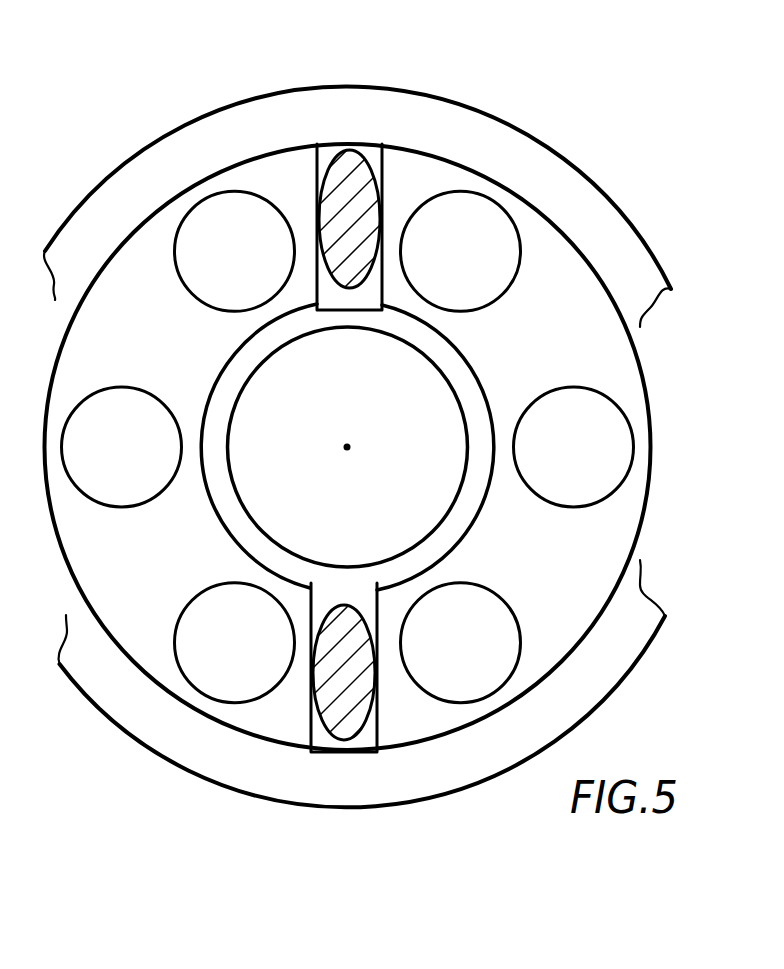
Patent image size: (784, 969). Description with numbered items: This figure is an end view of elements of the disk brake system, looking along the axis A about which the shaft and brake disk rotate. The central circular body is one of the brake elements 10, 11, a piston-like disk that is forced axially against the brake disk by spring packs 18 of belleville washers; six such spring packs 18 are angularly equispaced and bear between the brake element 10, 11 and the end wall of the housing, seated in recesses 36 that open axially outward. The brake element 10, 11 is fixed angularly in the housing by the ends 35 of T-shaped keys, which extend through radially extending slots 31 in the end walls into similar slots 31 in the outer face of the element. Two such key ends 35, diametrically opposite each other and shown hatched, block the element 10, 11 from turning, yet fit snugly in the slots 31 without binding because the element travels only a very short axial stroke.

The brake element 10 is at (559, 265).
The brake element 11 is at (357, 447).
The spring pack 18 is at (481, 215).
The recess 36 is at (461, 251).
The slot 31 is at (372, 303).
The key end 35 is at (343, 205).
The axis A is at (348, 446).